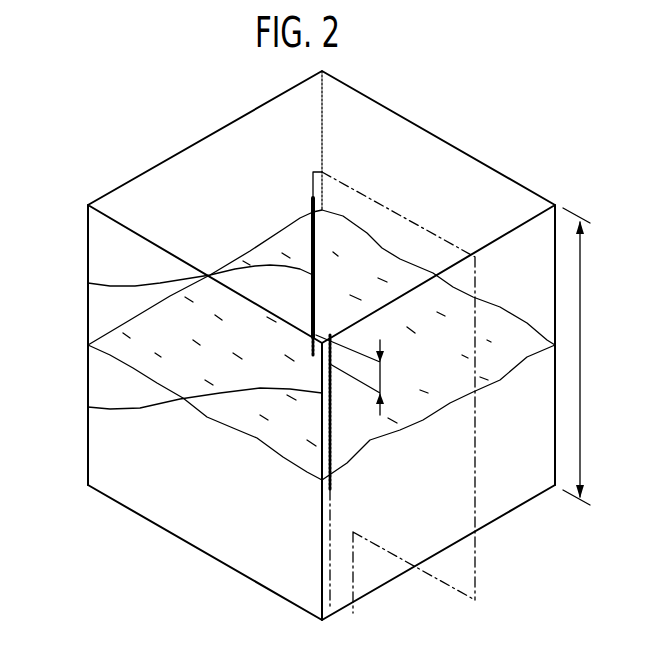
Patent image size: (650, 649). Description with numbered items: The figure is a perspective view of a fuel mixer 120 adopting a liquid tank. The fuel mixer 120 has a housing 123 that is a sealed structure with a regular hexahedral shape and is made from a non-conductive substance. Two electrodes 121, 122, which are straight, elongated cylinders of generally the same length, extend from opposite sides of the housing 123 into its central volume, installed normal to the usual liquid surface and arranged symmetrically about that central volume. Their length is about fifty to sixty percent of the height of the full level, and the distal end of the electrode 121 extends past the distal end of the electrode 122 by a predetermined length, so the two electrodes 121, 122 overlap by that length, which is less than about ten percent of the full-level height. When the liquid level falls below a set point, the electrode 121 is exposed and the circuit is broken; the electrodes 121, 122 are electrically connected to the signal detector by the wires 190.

The fuel mixer 120 is at (586, 88).
The electrode 121 is at (88, 283).
The electrode 122 is at (88, 407).
The housing 123 is at (88, 228).
The wires 190 is at (475, 567).